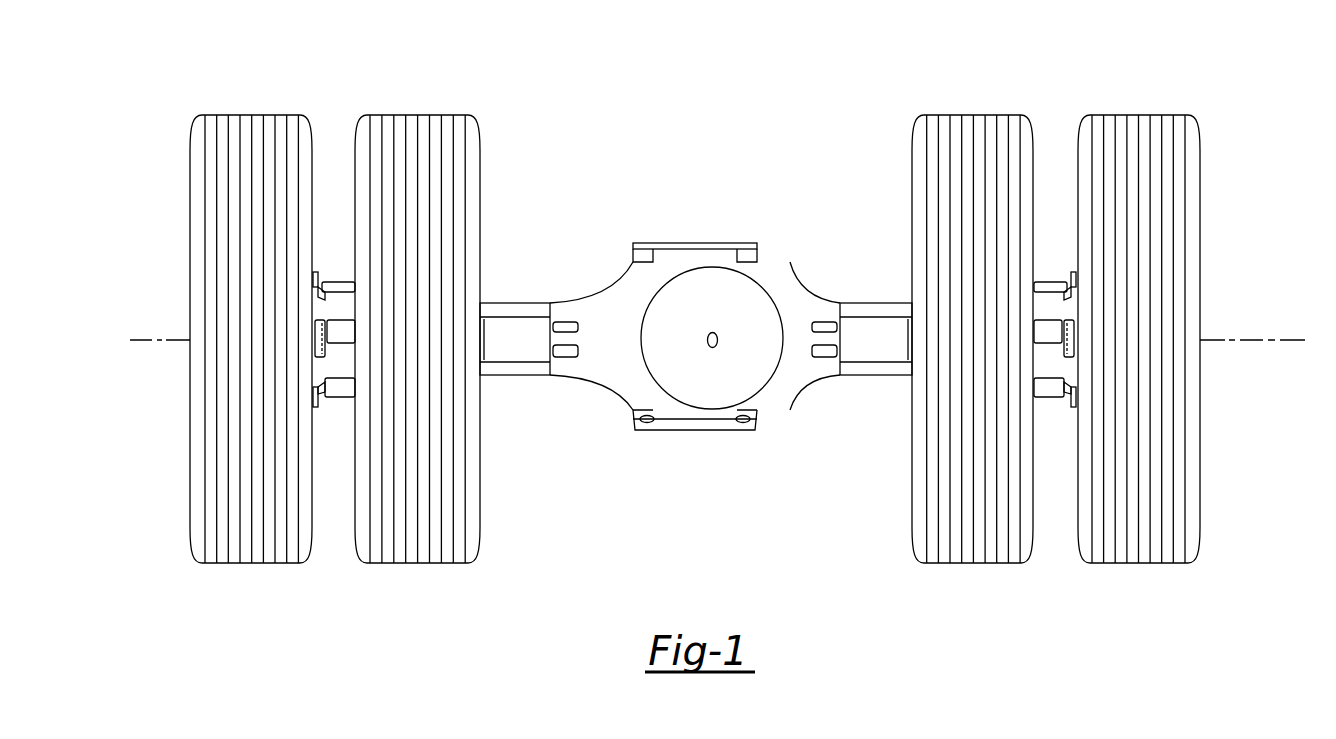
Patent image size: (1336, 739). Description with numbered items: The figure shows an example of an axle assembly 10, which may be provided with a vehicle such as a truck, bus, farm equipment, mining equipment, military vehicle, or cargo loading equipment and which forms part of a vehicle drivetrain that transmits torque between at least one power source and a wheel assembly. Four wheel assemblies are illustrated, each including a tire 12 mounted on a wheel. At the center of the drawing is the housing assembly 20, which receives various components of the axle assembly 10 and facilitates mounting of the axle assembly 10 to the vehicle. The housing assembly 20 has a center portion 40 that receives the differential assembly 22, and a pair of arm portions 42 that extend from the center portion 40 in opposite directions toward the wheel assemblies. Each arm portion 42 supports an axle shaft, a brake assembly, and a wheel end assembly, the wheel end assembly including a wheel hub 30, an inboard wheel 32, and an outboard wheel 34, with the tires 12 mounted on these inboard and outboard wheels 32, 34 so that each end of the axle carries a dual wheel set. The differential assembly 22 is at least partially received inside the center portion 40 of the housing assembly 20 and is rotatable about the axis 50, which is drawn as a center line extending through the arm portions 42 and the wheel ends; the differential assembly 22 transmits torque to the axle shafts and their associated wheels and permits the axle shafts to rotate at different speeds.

The axle assembly 10 is at (757, 132).
The tire 12 is at (410, 114).
The housing assembly 20 is at (638, 230).
The differential assembly 22 is at (710, 370).
The wheel hub 30 is at (331, 279).
The inboard wheel 32 is at (480, 233).
The outboard wheel 34 is at (190, 233).
The center portion 40 is at (695, 243).
The arm portion 42 is at (515, 375).
The axis 50 is at (1252, 340).